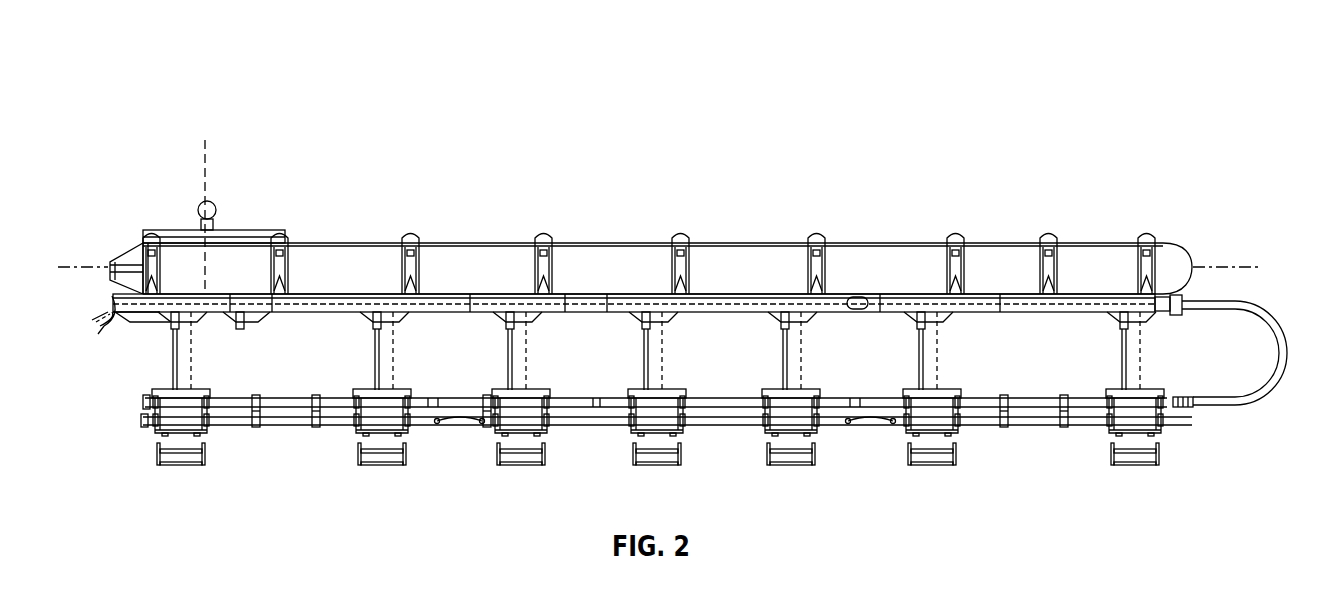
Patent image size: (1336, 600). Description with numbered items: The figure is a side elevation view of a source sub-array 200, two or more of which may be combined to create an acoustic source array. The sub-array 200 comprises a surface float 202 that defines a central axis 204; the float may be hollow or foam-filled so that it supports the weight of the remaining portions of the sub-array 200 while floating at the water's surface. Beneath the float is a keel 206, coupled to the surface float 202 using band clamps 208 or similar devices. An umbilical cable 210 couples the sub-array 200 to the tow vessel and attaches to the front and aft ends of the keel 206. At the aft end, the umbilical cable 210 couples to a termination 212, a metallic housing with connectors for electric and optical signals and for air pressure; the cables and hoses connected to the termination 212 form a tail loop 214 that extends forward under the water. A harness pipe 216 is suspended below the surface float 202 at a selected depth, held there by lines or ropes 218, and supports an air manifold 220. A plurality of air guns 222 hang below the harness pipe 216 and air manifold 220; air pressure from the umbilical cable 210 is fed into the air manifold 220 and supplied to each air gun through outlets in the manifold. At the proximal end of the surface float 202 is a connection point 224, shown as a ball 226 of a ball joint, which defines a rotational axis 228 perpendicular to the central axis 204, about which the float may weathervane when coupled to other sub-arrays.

The source sub-array 200 is at (136, 78).
The surface float 202 is at (610, 252).
The central axis 204 is at (1235, 267).
The keel 206 is at (352, 316).
The band clamps 208 is at (286, 242).
The umbilical cable 210 is at (100, 315).
The termination 212 is at (1176, 318).
The tail loop 214 is at (1240, 301).
The harness pipe 216 is at (1032, 396).
The lines or ropes 218 is at (173, 357).
The air manifold 220 is at (142, 423).
The air guns 222 is at (183, 467).
The connection point 224 is at (236, 210).
The ball 226 is at (200, 205).
The rotational axis 228 is at (200, 162).